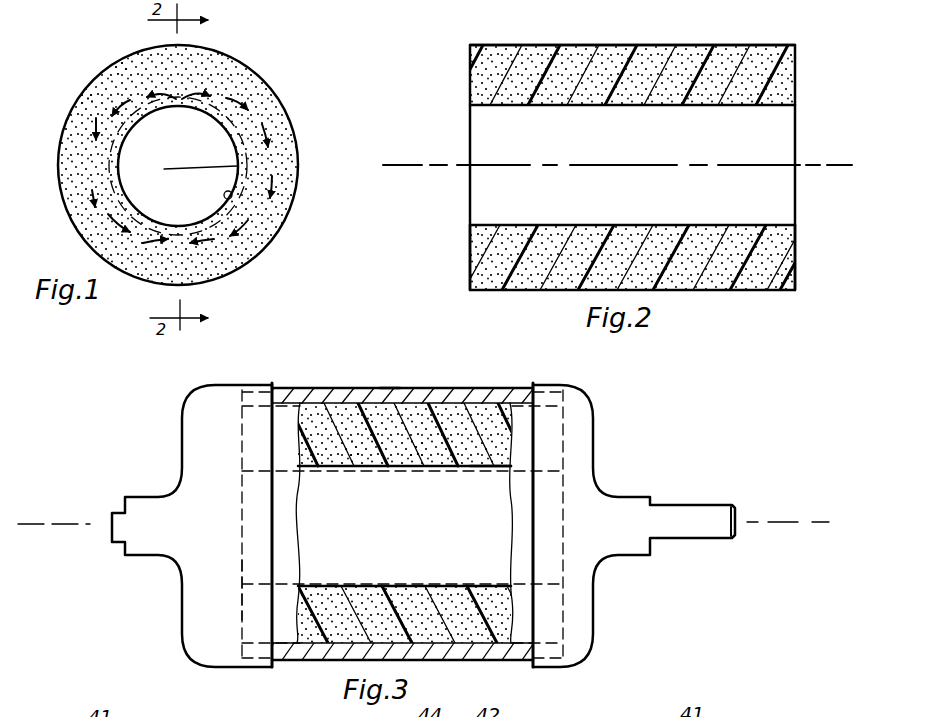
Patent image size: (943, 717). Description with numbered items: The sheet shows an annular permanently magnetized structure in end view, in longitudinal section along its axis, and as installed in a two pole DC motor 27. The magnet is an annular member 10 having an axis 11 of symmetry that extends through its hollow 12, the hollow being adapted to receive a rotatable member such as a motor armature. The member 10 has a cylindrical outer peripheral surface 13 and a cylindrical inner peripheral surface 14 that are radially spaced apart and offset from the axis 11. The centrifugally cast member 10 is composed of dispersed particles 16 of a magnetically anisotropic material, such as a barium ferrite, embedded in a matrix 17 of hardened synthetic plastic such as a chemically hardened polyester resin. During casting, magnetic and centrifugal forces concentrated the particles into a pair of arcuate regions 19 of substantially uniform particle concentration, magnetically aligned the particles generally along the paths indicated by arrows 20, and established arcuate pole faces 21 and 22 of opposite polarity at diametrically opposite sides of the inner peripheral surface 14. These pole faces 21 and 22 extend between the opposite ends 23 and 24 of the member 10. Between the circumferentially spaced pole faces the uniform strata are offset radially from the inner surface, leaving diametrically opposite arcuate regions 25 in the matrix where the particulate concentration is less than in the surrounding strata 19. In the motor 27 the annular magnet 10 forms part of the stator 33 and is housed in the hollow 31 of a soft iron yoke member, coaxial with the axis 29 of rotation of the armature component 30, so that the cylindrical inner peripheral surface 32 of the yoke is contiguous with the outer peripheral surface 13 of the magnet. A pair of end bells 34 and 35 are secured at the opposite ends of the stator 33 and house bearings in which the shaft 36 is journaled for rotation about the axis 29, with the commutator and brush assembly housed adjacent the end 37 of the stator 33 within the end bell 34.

In FIG. 1, the annular member 10 is at (254, 74).
In FIG. 2, the annular member 10 is at (470, 60).
In FIG. 3, the annular member 10 is at (450, 392).
In FIG. 2, the axis 11 is at (410, 166).
In FIG. 1, the hollow 12 is at (240, 203).
In FIG. 2, the hollow 12 is at (795, 108).
In FIG. 1, the cylindrical outer peripheral surface 13 is at (226, 52).
In FIG. 2, the cylindrical outer peripheral surface 13 is at (660, 45).
In FIG. 3, the cylindrical outer peripheral surface 13 is at (387, 390).
In FIG. 1, the cylindrical inner peripheral surface 14 is at (237, 150).
In FIG. 2, the cylindrical inner peripheral surface 14 is at (545, 107).
In FIG. 1, the dispersed particles 16 is at (120, 66).
In FIG. 2, the dispersed particles 16 is at (535, 45).
In FIG. 3, the dispersed particles 16 is at (352, 468).
In FIG. 1, the matrix 17 is at (84, 100).
In FIG. 2, the matrix 17 is at (475, 86).
In FIG. 3, the matrix 17 is at (415, 468).
In FIG. 1, the regions (strata) 19 is at (76, 146).
In FIG. 1, the arrows 20 is at (268, 137).
In FIG. 1, the pole face 21 is at (176, 118).
In FIG. 2, the pole face 21 is at (640, 107).
In FIG. 1, the pole face 22 is at (179, 219).
In FIG. 2, the pole face 22 is at (645, 225).
In FIG. 2, the end 23 is at (470, 260).
In FIG. 2, the end 24 is at (797, 252).
In FIG. 1, the arcuate regions 25 is at (120, 172).
In FIG. 3, the two pole DC motor 27 is at (470, 516).
In FIG. 3, the axis 29 is at (797, 522).
In FIG. 3, the armature component 30 is at (500, 458).
In FIG. 3, the hollow 31 is at (262, 582).
In FIG. 3, the cylindrical inner peripheral surface 32 is at (300, 413).
In FIG. 3, the stator 33 is at (340, 388).
In FIG. 3, the end bell 34 is at (182, 425).
In FIG. 3, the end bell 35 is at (593, 402).
In FIG. 3, the shaft 36 is at (710, 505).
In FIG. 3, the end 37 is at (242, 607).